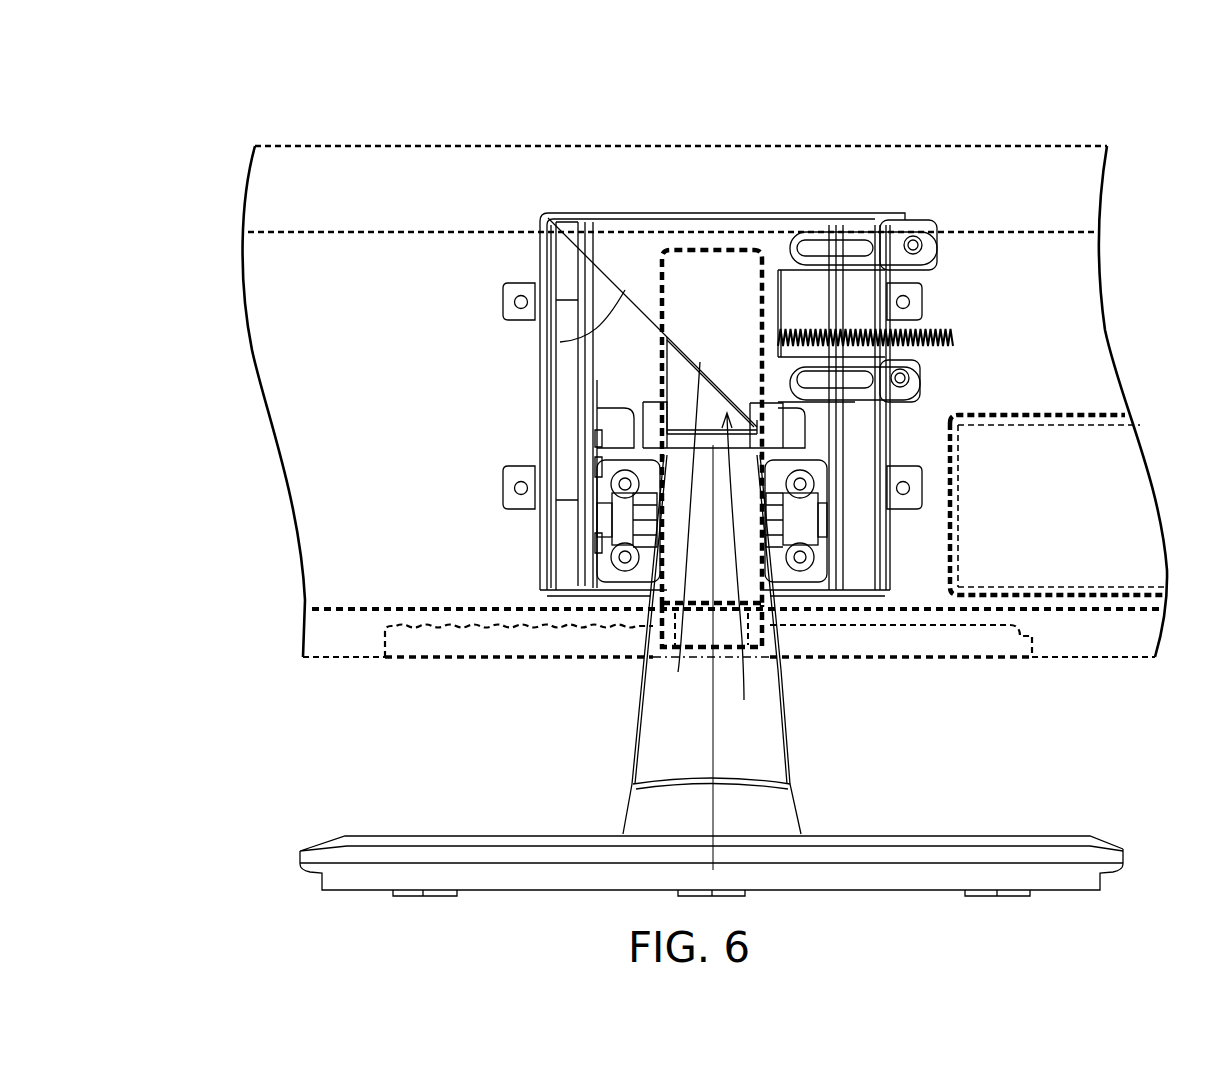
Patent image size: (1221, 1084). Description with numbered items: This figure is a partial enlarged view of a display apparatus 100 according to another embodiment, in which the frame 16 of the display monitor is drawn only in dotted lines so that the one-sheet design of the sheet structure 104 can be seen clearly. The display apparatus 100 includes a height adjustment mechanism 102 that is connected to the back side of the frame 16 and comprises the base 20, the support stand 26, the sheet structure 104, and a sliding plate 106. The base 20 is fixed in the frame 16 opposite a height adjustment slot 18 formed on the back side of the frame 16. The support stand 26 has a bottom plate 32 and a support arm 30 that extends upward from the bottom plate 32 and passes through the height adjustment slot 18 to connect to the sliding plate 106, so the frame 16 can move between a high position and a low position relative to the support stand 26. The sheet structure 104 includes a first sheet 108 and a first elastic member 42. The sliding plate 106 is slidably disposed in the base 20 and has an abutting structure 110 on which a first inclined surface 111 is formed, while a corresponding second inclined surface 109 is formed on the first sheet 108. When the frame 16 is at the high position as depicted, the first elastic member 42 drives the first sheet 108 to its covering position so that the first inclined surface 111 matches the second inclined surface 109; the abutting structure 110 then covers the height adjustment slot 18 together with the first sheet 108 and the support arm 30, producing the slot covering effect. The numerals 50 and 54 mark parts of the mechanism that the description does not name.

The display apparatus 100 is at (303, 125).
The frame 16 is at (1071, 219).
The height adjustment mechanism 102 is at (523, 207).
The sheet structure 104 is at (973, 112).
The first sheet 108 is at (640, 239).
The second inclined surface 109 is at (560, 342).
The height adjustment slot 18 is at (646, 374).
The base 20 is at (557, 540).
The first elastic member 42 is at (813, 328).
The link arm 50 is at (908, 236).
The pivot 54 is at (905, 385).
The sliding plate 106 is at (623, 580).
The first inclined surface 111 is at (678, 672).
The abutting structure 110 is at (744, 700).
The support arm 30 is at (650, 737).
The bottom plate 32 is at (378, 855).
The support stand 26 is at (293, 900).